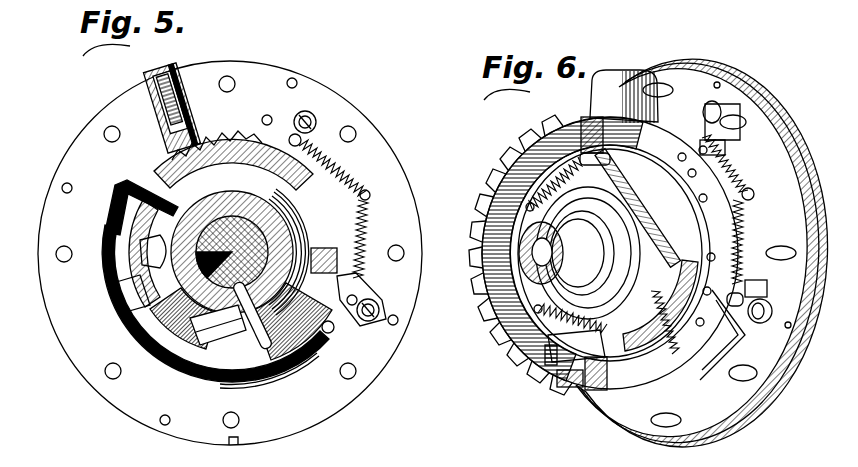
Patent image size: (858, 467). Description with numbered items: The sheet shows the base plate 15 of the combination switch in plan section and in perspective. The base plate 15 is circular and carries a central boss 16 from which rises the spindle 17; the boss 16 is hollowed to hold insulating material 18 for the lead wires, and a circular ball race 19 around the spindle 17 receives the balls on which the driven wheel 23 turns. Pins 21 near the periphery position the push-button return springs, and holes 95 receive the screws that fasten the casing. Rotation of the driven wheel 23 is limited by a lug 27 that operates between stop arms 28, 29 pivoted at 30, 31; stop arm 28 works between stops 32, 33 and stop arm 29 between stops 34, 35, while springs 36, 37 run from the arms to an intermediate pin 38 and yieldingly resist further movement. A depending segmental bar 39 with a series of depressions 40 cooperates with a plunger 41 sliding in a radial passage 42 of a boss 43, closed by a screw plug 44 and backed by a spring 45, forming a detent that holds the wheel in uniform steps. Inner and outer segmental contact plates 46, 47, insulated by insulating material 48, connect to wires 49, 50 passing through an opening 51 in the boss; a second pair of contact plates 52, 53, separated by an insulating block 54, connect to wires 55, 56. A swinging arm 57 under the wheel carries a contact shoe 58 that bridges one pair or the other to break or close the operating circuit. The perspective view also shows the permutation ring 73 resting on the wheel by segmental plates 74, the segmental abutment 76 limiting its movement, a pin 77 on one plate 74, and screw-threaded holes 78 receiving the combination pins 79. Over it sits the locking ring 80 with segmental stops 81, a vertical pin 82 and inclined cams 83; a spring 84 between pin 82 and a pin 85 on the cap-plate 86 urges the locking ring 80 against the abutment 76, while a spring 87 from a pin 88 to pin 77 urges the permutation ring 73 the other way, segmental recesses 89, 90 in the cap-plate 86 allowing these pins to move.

In FIG. 5, the base plate 15 is at (152, 428).
In FIG. 6, the base plate 15 is at (722, 432).
In FIG. 5, the central boss 16 is at (346, 188).
In FIG. 6, the spindle 17 is at (540, 292).
In FIG. 5, the insulating material 18 is at (348, 194).
In FIG. 6, the circular ball race 19 is at (696, 239).
In FIG. 5, the pins 21 is at (225, 76).
In FIG. 6, the pins 21 is at (672, 92).
In FIG. 6, the driven wheel 23 is at (548, 296).
In FIG. 5, the lug 27 is at (322, 248).
In FIG. 6, the lug 27 is at (752, 258).
In FIG. 5, the stop arm 28 is at (356, 326).
In FIG. 6, the stop arm 28 is at (768, 292).
In FIG. 5, the stop arm 29 is at (290, 128).
In FIG. 6, the stop arm 29 is at (740, 118).
In FIG. 5, the pivot 30 is at (376, 302).
In FIG. 6, the pivot 30 is at (760, 323).
In FIG. 5, the pivot 31 is at (313, 112).
In FIG. 6, the pivot 31 is at (745, 108).
In FIG. 5, the stop 32 is at (352, 286).
In FIG. 6, the stop 32 is at (768, 262).
In FIG. 5, the stop 33 is at (333, 331).
In FIG. 5, the stop 34 is at (302, 143).
In FIG. 6, the stop 34 is at (748, 150).
In FIG. 5, the stop 35 is at (262, 119).
In FIG. 5, the spring 36 is at (370, 236).
In FIG. 6, the spring 36 is at (748, 224).
In FIG. 5, the spring 37 is at (336, 170).
In FIG. 6, the spring 37 is at (732, 168).
In FIG. 5, the intermediate pin 38 is at (372, 195).
In FIG. 6, the intermediate pin 38 is at (752, 190).
In FIG. 5, the segmental bar 39 is at (222, 198).
In FIG. 5, the depressions 40 is at (262, 142).
In FIG. 5, the plunger 41 is at (165, 170).
In FIG. 5, the passage 42 is at (148, 112).
In FIG. 5, the boss 43 is at (150, 100).
In FIG. 5, the screw plug 44 is at (166, 70).
In FIG. 5, the spring 45 is at (160, 90).
In FIG. 5, the inner segmental contact plate 46 is at (118, 236).
In FIG. 5, the outer segmental contact plate 47 is at (146, 248).
In FIG. 5, the insulating material 48 is at (122, 288).
In FIG. 6, the insulating material 48 is at (782, 334).
In FIG. 5, the wire 49 is at (186, 208).
In FIG. 5, the wire 50 is at (203, 204).
In FIG. 5, the opening 51 is at (246, 200).
In FIG. 5, the contact plate 52 is at (250, 357).
In FIG. 6, the contact plate 52 is at (668, 384).
In FIG. 5, the contact plate 53 is at (215, 332).
In FIG. 5, the insulating block 54 is at (195, 326).
In FIG. 5, the wire 55 is at (280, 372).
In FIG. 5, the wire 56 is at (225, 352).
In FIG. 5, the swinging arm 57 is at (150, 318).
In FIG. 5, the contact shoe 58 is at (135, 300).
In FIG. 6, the permutation ring 73 is at (618, 398).
In FIG. 6, the segmental plates 74 is at (640, 162).
In FIG. 6, the segmental abutment 76 is at (650, 250).
In FIG. 6, the pin 77 is at (592, 118).
In FIG. 6, the screw-threaded holes 78 is at (726, 318).
In FIG. 6, the pins 79 is at (762, 190).
In FIG. 6, the locking ring 80 is at (656, 296).
In FIG. 6, the segmental stops 81 is at (640, 178).
In FIG. 6, the vertical pin 82 is at (608, 362).
In FIG. 6, the inclined ribs or cams 83 is at (560, 336).
In FIG. 6, the spring 84 is at (565, 374).
In FIG. 6, the pin 85 is at (543, 312).
In FIG. 6, the cap-plate 86 is at (530, 272).
In FIG. 6, the spring 87 is at (540, 198).
In FIG. 6, the pin 88 is at (528, 212).
In FIG. 6, the segmental recess 89 is at (522, 150).
In FIG. 6, the segmental recess 90 is at (575, 362).
In FIG. 5, the holes 95 is at (292, 78).
In FIG. 6, the holes 95 is at (720, 84).